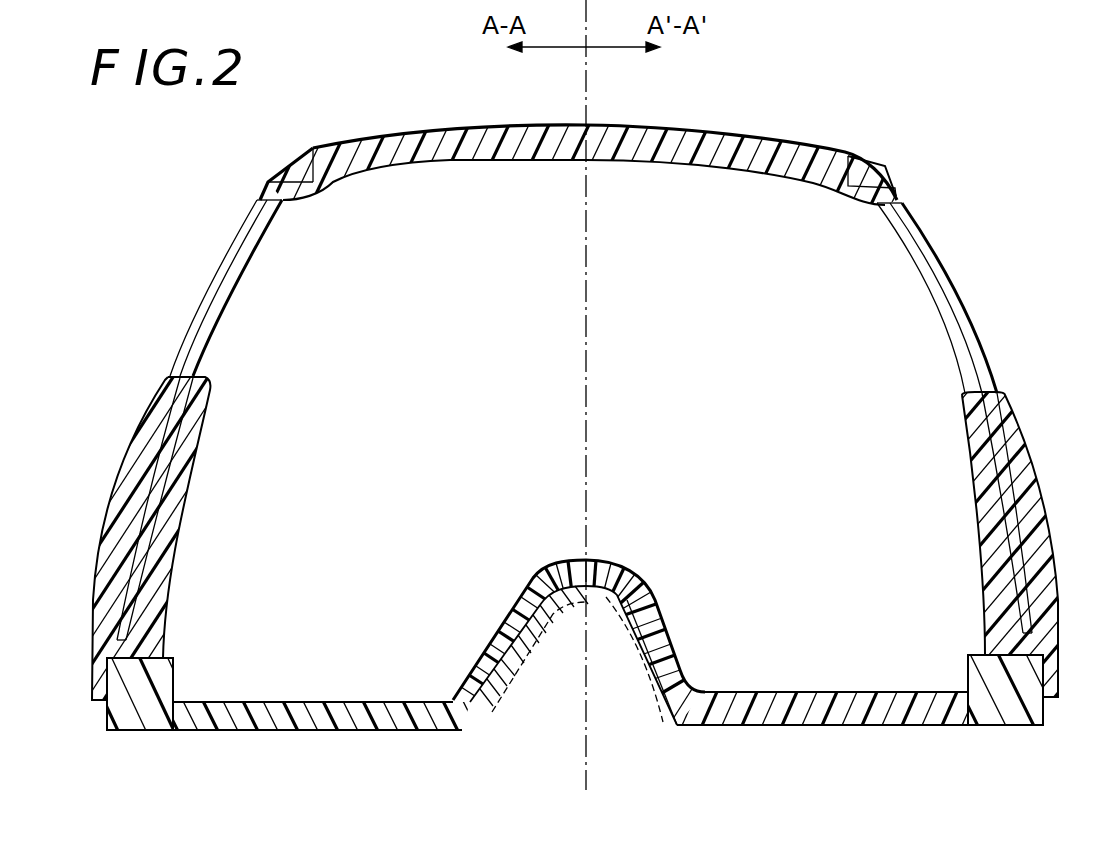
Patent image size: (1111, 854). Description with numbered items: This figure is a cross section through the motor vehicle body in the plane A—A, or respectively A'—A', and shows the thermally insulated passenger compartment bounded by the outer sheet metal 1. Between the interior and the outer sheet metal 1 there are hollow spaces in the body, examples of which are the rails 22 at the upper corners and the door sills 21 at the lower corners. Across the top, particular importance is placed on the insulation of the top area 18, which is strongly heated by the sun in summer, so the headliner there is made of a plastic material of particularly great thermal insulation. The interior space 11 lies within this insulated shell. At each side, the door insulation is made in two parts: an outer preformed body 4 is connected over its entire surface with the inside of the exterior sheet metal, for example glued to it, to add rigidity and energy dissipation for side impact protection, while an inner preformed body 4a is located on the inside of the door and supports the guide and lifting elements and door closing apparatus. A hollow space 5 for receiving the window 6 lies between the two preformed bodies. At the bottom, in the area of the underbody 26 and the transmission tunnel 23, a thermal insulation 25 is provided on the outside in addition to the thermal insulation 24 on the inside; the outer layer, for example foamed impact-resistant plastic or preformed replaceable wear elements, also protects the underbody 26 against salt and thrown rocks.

The outer sheet metal 1 is at (437, 126).
The top area 18 is at (550, 137).
The rails 22 is at (876, 163).
The window 6 is at (203, 300).
The interior space 11 is at (764, 341).
The outer preformed body 4 is at (1040, 515).
The inner preformed body 4a is at (978, 468).
The hollow space 5 is at (1002, 510).
The door sills 21 is at (1013, 727).
The underbody 26 is at (808, 727).
The transmission tunnel 23 is at (548, 655).
The thermal insulation on the inside 24 is at (596, 594).
The thermal insulation on the outside 25 is at (655, 690).